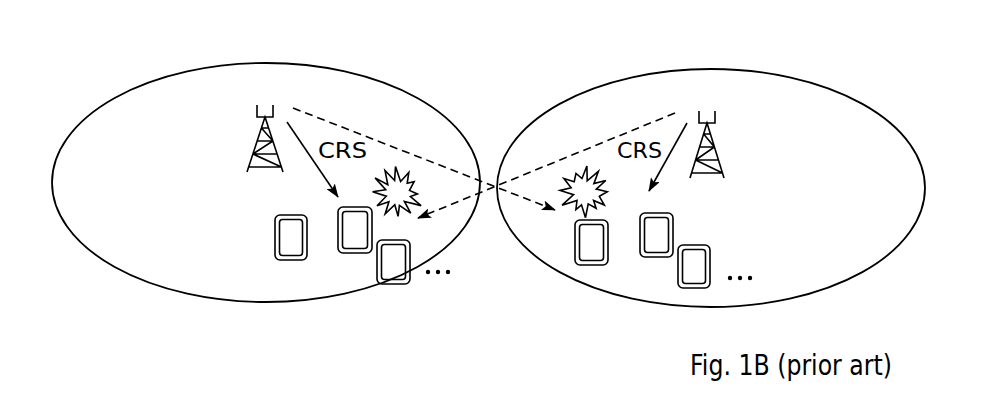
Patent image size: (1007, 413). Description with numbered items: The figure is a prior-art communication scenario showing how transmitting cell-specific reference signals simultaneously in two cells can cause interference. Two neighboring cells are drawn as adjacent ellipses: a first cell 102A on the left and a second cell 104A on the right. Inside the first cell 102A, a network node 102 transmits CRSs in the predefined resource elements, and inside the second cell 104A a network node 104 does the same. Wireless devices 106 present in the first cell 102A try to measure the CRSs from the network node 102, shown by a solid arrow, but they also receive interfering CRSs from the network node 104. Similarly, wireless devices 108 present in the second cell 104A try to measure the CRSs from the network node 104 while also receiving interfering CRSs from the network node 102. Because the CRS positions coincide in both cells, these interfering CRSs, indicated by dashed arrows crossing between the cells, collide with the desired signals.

The first cell 102A is at (319, 62).
The second cell 104A is at (763, 67).
The network node 102 is at (250, 150).
The network node 104 is at (719, 156).
The wireless devices 106 is at (261, 244).
The wireless devices 108 is at (724, 232).